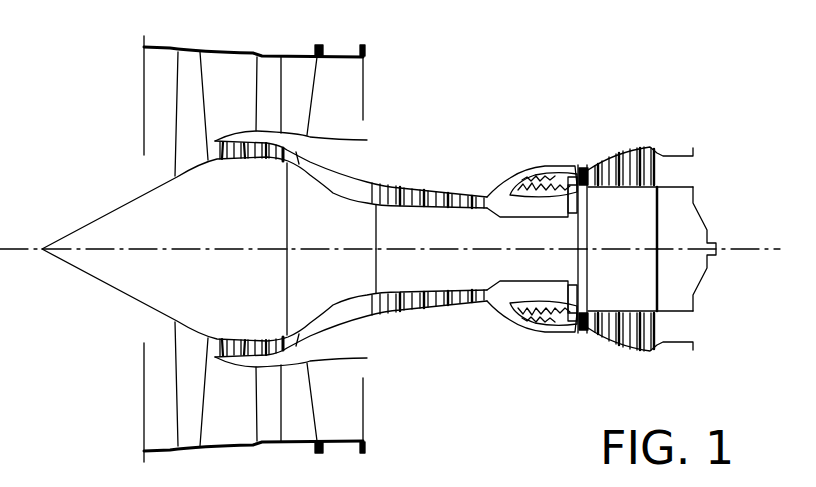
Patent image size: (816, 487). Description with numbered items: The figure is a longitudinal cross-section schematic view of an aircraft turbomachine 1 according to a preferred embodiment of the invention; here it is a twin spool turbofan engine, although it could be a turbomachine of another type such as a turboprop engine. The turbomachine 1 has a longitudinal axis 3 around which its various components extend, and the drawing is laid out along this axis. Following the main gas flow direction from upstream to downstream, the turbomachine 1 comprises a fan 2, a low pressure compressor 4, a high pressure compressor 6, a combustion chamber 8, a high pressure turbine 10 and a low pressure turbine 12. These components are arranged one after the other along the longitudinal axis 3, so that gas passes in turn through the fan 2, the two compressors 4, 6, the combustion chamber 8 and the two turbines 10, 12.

The aircraft turbomachine 1 is at (437, 69).
The fan 2 is at (190, 60).
The longitudinal axis 3 is at (762, 248).
The low pressure compressor 4 is at (232, 163).
The high pressure compressor 6 is at (443, 193).
The combustion chamber 8 is at (560, 177).
The high pressure turbine 10 is at (589, 168).
The low pressure turbine 12 is at (641, 149).